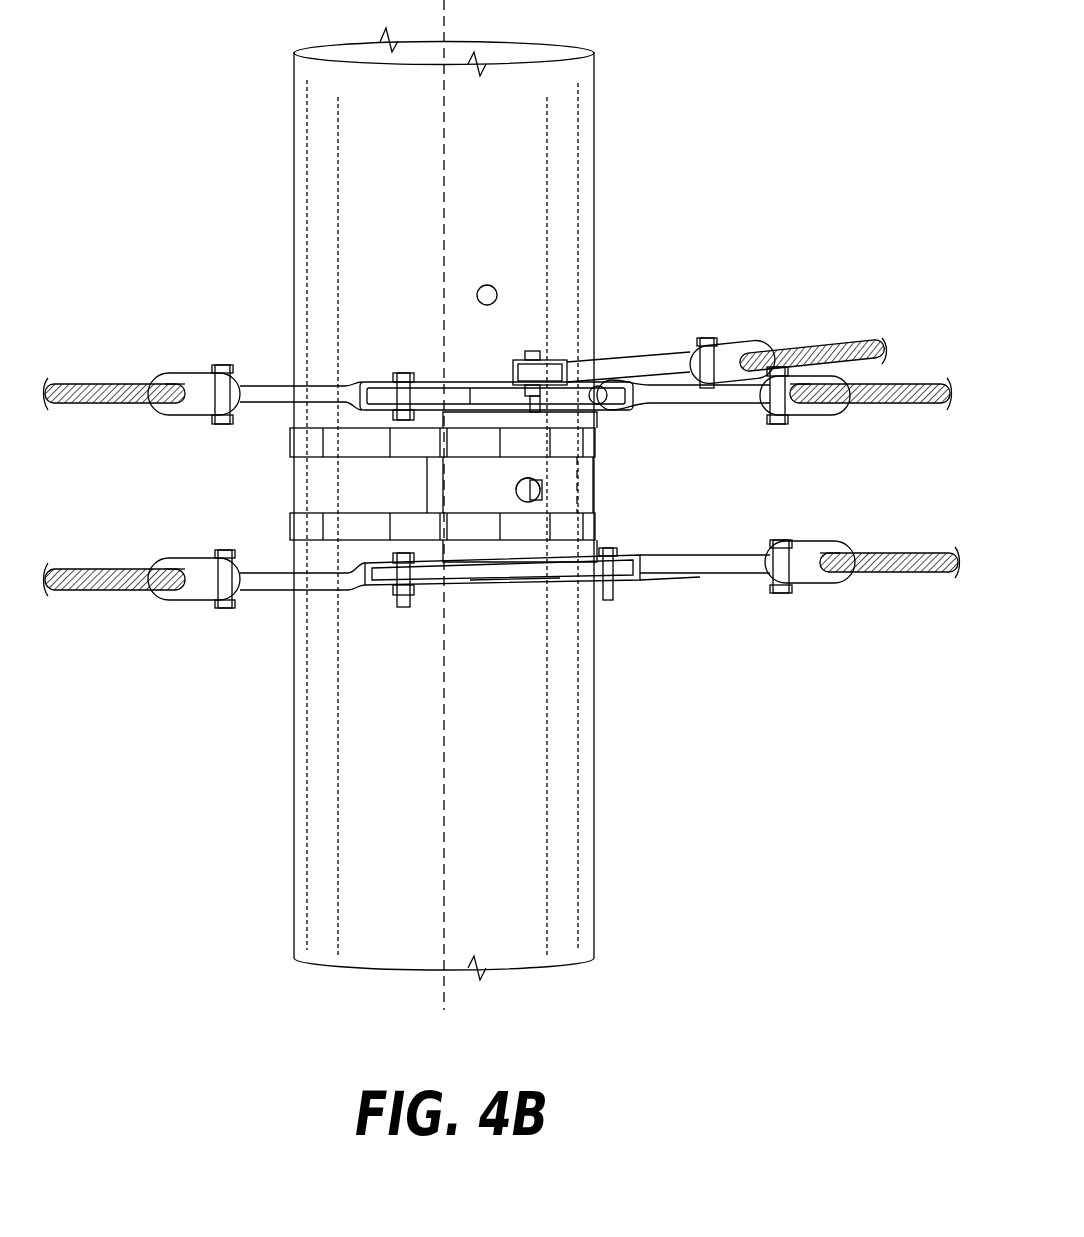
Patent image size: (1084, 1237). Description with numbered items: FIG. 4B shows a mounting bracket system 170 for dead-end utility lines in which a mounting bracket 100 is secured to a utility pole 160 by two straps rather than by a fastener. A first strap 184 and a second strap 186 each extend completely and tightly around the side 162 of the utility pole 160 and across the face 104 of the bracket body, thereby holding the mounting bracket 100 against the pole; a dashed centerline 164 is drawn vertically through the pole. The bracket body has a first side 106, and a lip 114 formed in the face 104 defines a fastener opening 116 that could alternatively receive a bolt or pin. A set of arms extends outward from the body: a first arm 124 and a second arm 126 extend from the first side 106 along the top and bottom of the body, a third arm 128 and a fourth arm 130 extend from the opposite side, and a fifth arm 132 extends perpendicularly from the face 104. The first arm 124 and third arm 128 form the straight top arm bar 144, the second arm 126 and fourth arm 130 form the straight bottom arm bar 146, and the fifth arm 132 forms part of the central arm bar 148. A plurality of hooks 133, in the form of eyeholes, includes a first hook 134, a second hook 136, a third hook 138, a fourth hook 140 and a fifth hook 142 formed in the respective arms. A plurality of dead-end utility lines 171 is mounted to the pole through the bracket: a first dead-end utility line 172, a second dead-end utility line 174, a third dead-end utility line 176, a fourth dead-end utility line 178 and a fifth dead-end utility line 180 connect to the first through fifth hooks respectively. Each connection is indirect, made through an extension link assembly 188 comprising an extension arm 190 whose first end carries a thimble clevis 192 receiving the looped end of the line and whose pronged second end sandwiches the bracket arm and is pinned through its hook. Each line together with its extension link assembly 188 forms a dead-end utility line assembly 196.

The mounting bracket 100 is at (488, 488).
The face 104 is at (572, 489).
The first side 106 is at (430, 485).
The lip 114 is at (570, 497).
The fastener opening 116 is at (572, 472).
The first arm 124 is at (426, 382).
The second arm 126 is at (428, 588).
The third arm 128 is at (612, 395).
The fourth arm 130 is at (585, 588).
The fifth arm 132 is at (538, 358).
The plurality of hooks 133 is at (675, 642).
The first hook 134 is at (380, 372).
The second hook 136 is at (388, 606).
The third hook 138 is at (622, 410).
The fourth hook 140 is at (642, 550).
The fifth hook 142 is at (562, 392).
The top arm bar 144 is at (474, 386).
The bottom arm bar 146 is at (552, 584).
The central arm bar 148 is at (522, 360).
The utility pole 160 is at (618, 115).
The side 162 is at (588, 296).
The pole axis 164 is at (444, 38).
The mounting bracket system 170 is at (451, 343).
The plurality of dead-end utility lines 171 is at (453, 604).
The first dead-end utility line 172 is at (148, 380).
The second dead-end utility line 174 is at (82, 591).
The third dead-end utility line 176 is at (893, 408).
The fourth dead-end utility line 178 is at (905, 572).
The fifth dead-end utility line 180 is at (858, 346).
The first strap 184 is at (290, 440).
The second strap 186 is at (290, 527).
The extension link assembly 188 is at (270, 355).
The extension arm 190 is at (270, 412).
The thimble clevis 192 is at (146, 425).
The dead-end utility line assembly 196 is at (148, 325).